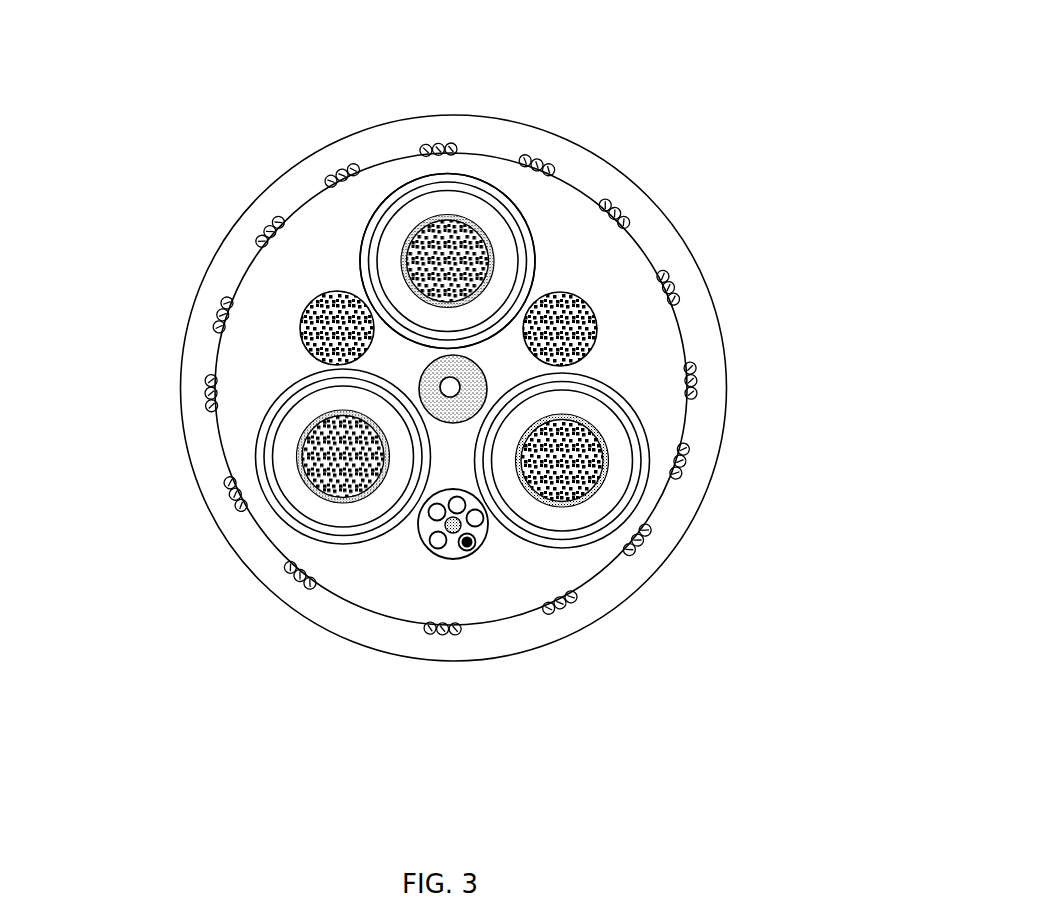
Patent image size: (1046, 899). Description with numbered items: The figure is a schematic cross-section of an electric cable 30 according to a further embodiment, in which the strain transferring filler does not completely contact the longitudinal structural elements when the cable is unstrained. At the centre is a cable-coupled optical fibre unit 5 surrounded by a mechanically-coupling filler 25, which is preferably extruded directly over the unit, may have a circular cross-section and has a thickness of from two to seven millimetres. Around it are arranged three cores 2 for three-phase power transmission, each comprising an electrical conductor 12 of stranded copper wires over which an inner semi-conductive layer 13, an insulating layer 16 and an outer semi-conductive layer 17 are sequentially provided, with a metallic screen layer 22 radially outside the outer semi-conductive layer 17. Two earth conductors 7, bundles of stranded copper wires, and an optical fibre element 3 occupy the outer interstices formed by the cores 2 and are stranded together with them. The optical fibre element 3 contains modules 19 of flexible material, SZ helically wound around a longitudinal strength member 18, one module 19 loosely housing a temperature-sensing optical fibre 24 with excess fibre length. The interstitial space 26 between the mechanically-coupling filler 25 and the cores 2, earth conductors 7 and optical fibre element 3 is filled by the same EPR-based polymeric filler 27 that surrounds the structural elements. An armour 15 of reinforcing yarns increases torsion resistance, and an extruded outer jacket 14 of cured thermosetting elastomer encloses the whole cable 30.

The core 2 is at (469, 327).
The optical fibre element 3 is at (375, 621).
The cable-coupled optical fibre unit 5 is at (447, 388).
The earth conductor 7 is at (334, 314).
The electrical conductor 12 is at (593, 442).
The inner semi-conductive layer 13 is at (607, 460).
The outer jacket 14 is at (192, 322).
The armour 15 is at (222, 507).
The insulating layer 16 is at (615, 492).
The outer semi-conductive layer 17 is at (602, 525).
The longitudinal strength member 18 is at (425, 537).
The module 19 is at (502, 544).
The metallic screen layer 22 is at (588, 545).
The optical fibre 24 is at (467, 544).
The mechanically-coupling filler 25 is at (537, 293).
The interstitial space 26 is at (537, 267).
The polymeric filler 27 is at (247, 355).
The electric cable 30 is at (563, 100).